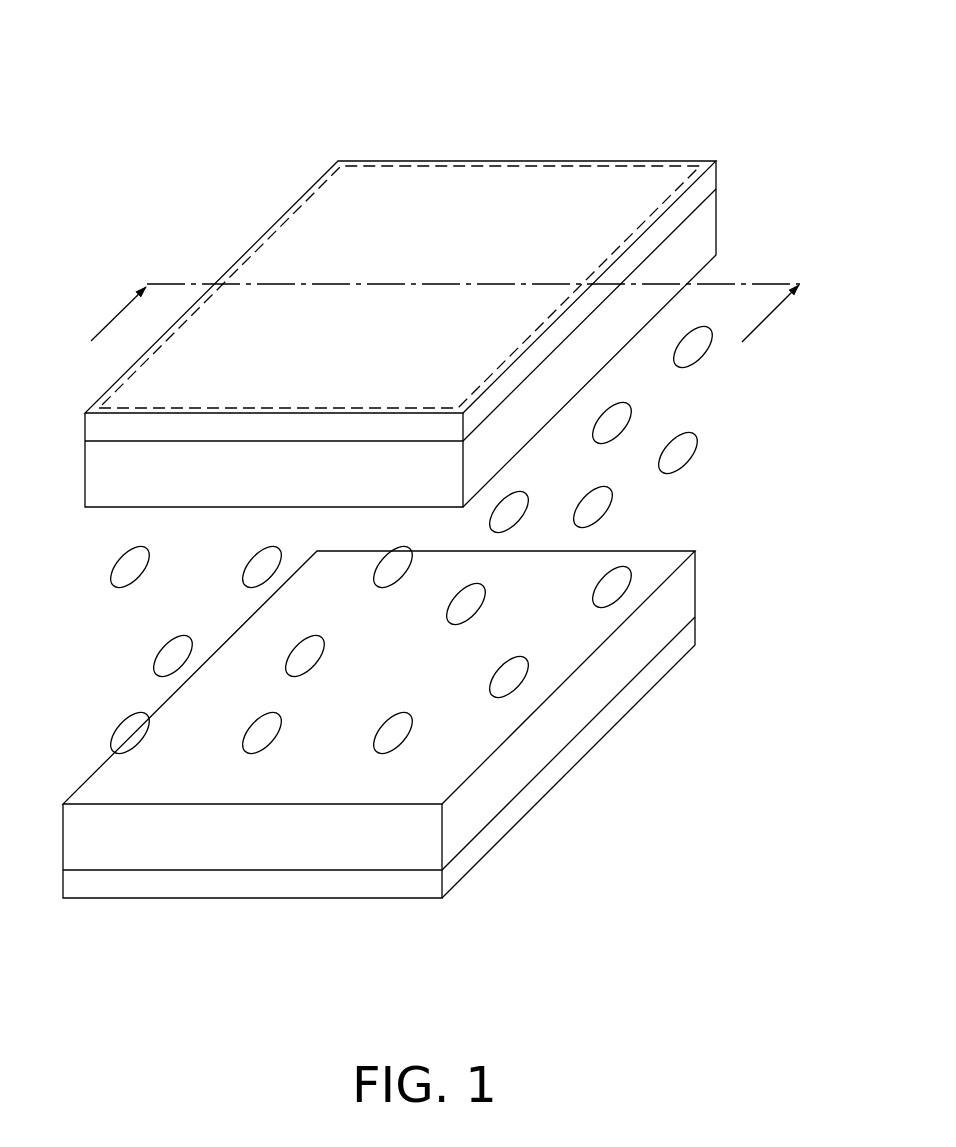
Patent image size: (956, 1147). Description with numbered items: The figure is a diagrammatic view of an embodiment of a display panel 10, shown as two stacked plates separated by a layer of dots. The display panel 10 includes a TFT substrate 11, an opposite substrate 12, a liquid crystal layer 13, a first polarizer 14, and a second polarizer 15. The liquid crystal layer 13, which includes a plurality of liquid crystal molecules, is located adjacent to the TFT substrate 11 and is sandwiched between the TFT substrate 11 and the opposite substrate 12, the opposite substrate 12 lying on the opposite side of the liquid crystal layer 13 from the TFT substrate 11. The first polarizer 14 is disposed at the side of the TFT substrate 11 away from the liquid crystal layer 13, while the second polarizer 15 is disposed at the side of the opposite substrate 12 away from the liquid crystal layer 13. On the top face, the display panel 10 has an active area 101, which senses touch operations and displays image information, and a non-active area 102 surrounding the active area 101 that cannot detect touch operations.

The display panel 10 is at (418, 42).
The active area 101 is at (428, 178).
The non-active area 102 is at (533, 163).
The TFT substrate 11 is at (673, 601).
The opposite substrate 12 is at (705, 238).
The liquid crystal layer 13 is at (672, 410).
The first polarizer 14 is at (685, 642).
The second polarizer 15 is at (708, 180).